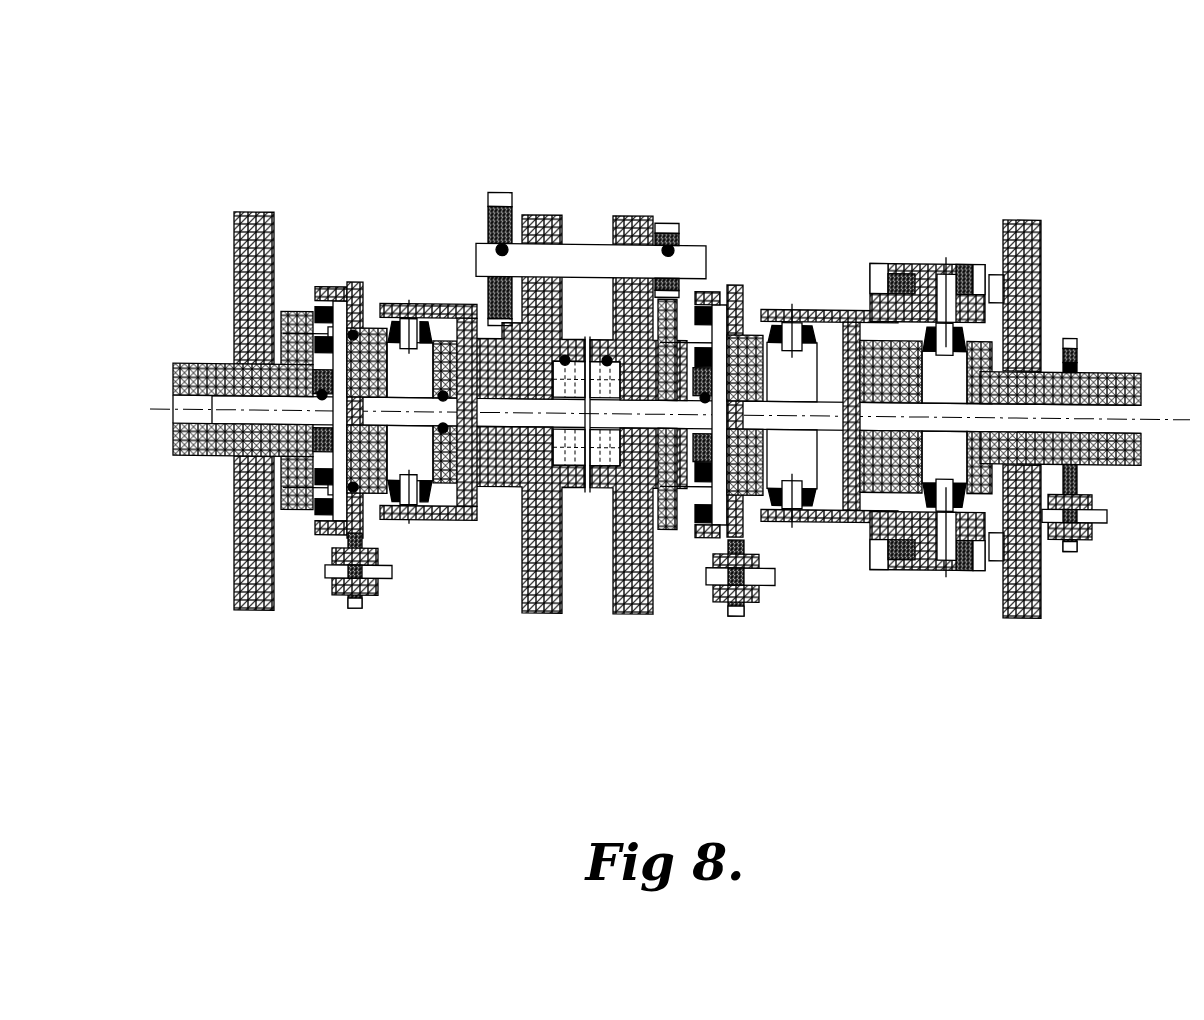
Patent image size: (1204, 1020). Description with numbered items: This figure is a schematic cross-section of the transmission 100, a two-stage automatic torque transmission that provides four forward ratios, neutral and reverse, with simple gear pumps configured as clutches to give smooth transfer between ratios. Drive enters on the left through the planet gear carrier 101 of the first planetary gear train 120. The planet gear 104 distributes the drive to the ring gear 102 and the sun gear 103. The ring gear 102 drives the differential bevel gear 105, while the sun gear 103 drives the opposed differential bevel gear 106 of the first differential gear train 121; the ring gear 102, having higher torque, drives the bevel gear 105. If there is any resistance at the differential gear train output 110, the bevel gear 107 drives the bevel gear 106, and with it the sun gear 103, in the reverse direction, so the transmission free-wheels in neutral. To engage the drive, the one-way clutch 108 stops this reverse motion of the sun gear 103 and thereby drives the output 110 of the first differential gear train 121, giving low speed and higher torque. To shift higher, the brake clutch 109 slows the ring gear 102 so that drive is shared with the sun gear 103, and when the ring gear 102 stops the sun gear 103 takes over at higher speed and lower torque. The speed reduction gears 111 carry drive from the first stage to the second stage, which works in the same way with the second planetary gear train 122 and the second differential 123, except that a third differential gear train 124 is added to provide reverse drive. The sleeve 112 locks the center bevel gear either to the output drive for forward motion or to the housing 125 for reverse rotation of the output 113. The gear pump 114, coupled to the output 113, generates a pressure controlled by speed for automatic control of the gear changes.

The transmission 100 is at (500, 167).
The planet gear carrier 101 is at (218, 373).
The ring gear 102 is at (323, 286).
The sun gear 103 is at (317, 441).
The planet gear 104 is at (317, 500).
The differential bevel gear 105 is at (365, 326).
The opposed differential bevel gear 106 is at (455, 518).
The bevel gear 107 is at (410, 298).
The one-way clutch 108 is at (569, 462).
The brake clutch 109 is at (347, 600).
The differential gear train output 110 is at (690, 253).
The speed reduction gears 111 is at (522, 212).
The sleeve 112 is at (912, 264).
The output 113 is at (1108, 360).
The gear pump 114 is at (1083, 538).
The first planetary gear train 120 is at (346, 261).
The first differential gear train 121 is at (409, 524).
The second planetary gear train 122 is at (693, 545).
The second differential 123 is at (798, 536).
The third differential gear train 124 is at (935, 577).
The housing 125 is at (1012, 227).